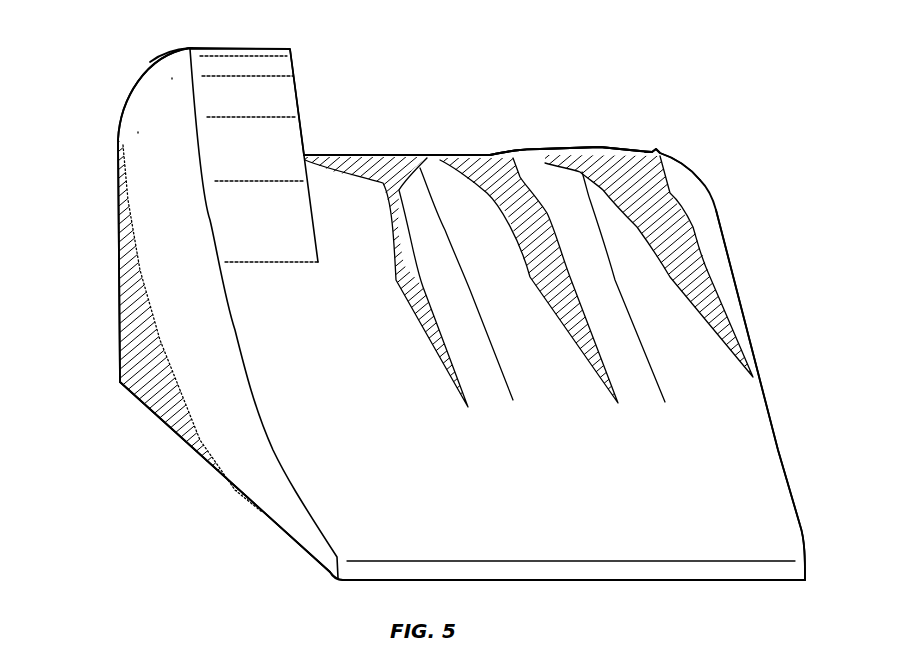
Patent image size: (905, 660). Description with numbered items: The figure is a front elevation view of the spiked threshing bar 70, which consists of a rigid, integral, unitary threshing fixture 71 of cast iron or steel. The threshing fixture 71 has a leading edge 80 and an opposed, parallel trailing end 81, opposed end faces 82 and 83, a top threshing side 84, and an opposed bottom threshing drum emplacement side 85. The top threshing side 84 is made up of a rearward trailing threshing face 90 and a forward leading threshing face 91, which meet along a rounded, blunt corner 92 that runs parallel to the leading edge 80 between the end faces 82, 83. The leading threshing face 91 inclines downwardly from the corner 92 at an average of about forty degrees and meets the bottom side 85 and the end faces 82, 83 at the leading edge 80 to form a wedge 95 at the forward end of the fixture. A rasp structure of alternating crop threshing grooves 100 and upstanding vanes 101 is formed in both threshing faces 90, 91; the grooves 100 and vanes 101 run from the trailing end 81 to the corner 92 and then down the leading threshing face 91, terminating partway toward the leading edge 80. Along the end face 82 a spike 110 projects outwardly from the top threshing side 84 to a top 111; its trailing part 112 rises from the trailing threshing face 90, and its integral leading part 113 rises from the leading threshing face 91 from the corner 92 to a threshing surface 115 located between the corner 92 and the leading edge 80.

The threshing bar 70 is at (750, 87).
The threshing fixture 71 is at (655, 151).
The leading edge 80 is at (585, 580).
The trailing end 81 is at (115, 252).
The end face 82 is at (180, 400).
The end face 83 is at (760, 375).
The top threshing side 84 is at (500, 253).
The bottom threshing drum emplacement side 85 is at (257, 513).
The trailing threshing face 90 is at (360, 153).
The leading threshing face 91 is at (660, 493).
The corner 92 is at (638, 230).
The wedge 95 is at (305, 535).
The crop threshing grooves 100 is at (343, 223).
The vanes 101 is at (477, 350).
The spike 110 is at (145, 110).
The top 111 is at (175, 48).
The trailing part 112 is at (138, 132).
The leading part 113 is at (172, 78).
The threshing surface 115 is at (268, 105).